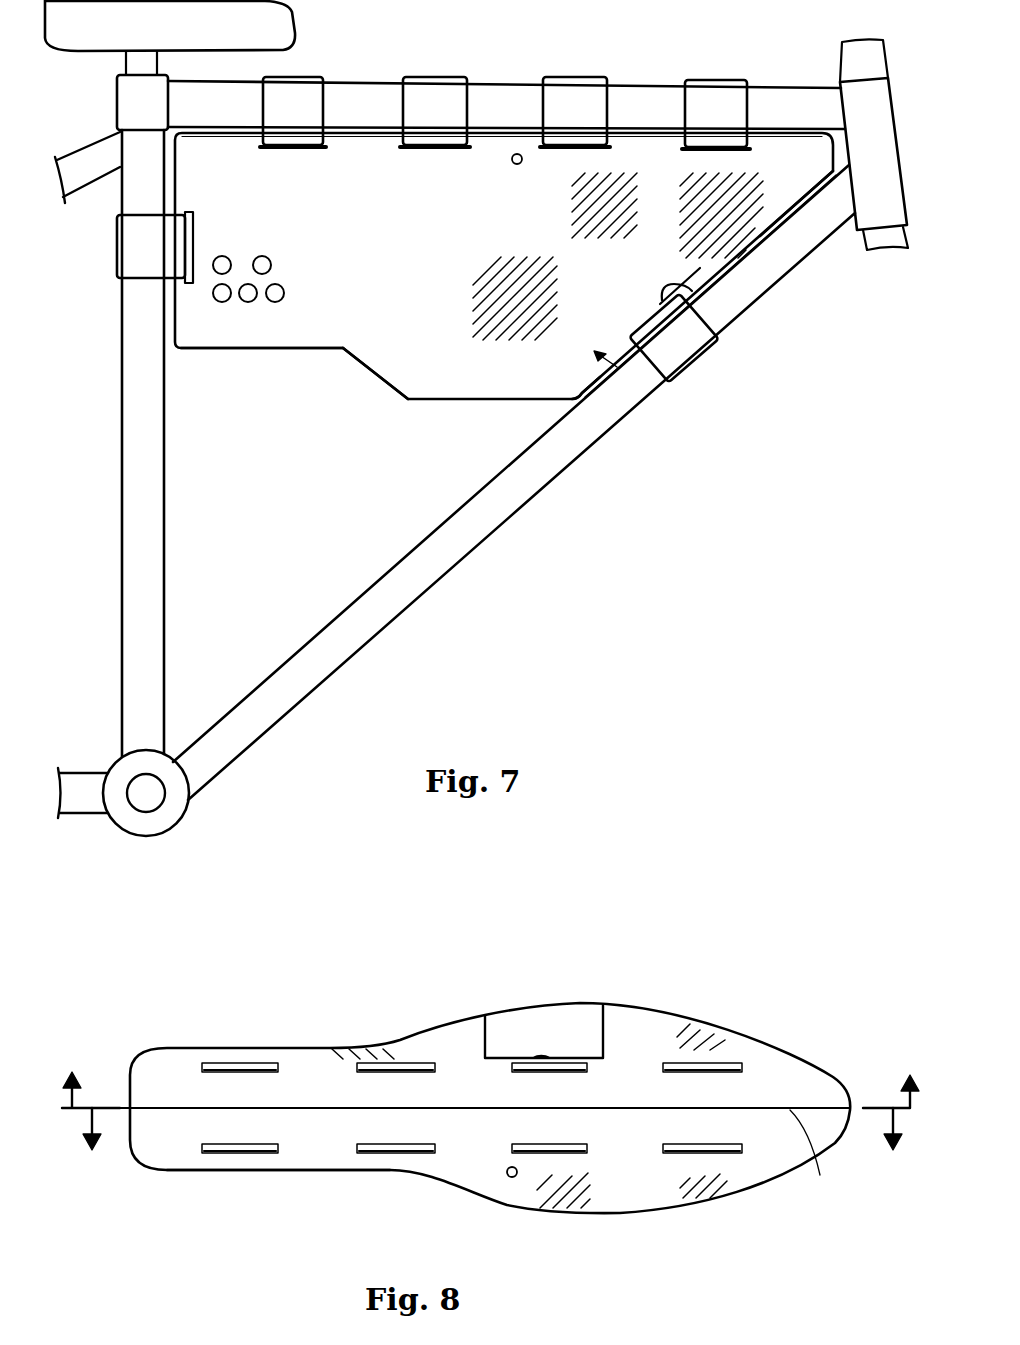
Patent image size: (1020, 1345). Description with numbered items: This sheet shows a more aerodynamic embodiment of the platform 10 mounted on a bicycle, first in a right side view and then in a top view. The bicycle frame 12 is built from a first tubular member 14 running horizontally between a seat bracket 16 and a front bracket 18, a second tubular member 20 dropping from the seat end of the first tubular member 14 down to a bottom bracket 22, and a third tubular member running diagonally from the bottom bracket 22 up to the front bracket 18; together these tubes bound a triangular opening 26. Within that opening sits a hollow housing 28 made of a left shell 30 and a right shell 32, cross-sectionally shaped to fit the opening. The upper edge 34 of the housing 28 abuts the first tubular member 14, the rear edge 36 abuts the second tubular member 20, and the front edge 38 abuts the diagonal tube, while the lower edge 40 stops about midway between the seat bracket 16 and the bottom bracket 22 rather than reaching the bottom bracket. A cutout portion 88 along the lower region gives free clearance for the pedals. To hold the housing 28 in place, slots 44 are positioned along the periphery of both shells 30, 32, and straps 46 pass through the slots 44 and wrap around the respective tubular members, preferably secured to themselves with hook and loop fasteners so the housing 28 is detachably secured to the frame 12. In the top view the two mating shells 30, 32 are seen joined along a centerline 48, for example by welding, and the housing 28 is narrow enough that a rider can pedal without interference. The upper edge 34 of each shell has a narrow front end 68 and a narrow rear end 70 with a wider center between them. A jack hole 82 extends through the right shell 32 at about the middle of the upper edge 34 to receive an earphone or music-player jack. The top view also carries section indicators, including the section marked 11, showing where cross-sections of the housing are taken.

In FIG. 8, the platform 10 is at (826, 1026).
In FIG. 8, the section line 11 is at (497, 1074).
In FIG. 7, the bicycle frame 12 is at (893, 78).
In FIG. 8, the bicycle frame 12 is at (497, 1148).
In FIG. 7, the first tubular member 14 is at (778, 100).
In FIG. 7, the seat bracket 16 is at (120, 112).
In FIG. 7, the front bracket 18 is at (893, 143).
In FIG. 7, the second tubular member 20 is at (163, 520).
In FIG. 7, the bottom bracket 22 is at (163, 767).
In FIG. 7, the triangular opening 26 is at (410, 552).
In FIG. 7, the hollow housing 28 is at (613, 373).
In FIG. 8, the hollow housing 28 is at (416, 1042).
In FIG. 8, the left shell 30 is at (748, 1045).
In FIG. 7, the right shell 32 is at (572, 380).
In FIG. 8, the right shell 32 is at (770, 1160).
In FIG. 7, the upper edge 34 is at (347, 130).
In FIG. 8, the upper edge 34 is at (642, 1122).
In FIG. 7, the rear edge 36 is at (173, 323).
In FIG. 7, the front edge 38 is at (754, 232).
In FIG. 7, the lower edge 40 is at (382, 380).
In FIG. 7, the slots 44 is at (707, 283).
In FIG. 8, the slots 44 is at (727, 1150).
In FIG. 7, the straps 46 is at (715, 85).
In FIG. 8, the centerline 48 is at (812, 1157).
In FIG. 8, the narrow front end 68 is at (840, 1125).
In FIG. 8, the narrow rear end 70 is at (310, 1143).
In FIG. 7, the jack hole 82 is at (514, 152).
In FIG. 8, the jack hole 82 is at (512, 1178).
In FIG. 7, the cutout portion 88 is at (278, 350).